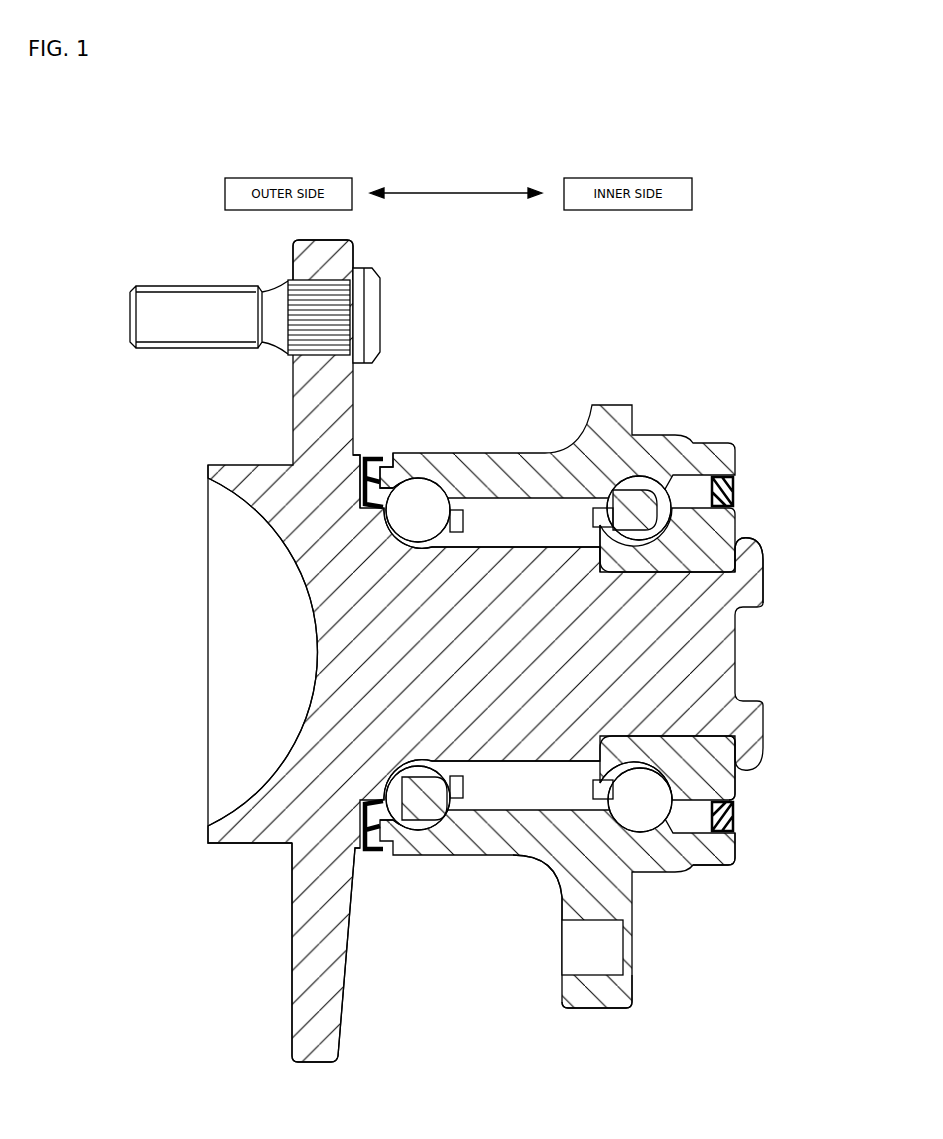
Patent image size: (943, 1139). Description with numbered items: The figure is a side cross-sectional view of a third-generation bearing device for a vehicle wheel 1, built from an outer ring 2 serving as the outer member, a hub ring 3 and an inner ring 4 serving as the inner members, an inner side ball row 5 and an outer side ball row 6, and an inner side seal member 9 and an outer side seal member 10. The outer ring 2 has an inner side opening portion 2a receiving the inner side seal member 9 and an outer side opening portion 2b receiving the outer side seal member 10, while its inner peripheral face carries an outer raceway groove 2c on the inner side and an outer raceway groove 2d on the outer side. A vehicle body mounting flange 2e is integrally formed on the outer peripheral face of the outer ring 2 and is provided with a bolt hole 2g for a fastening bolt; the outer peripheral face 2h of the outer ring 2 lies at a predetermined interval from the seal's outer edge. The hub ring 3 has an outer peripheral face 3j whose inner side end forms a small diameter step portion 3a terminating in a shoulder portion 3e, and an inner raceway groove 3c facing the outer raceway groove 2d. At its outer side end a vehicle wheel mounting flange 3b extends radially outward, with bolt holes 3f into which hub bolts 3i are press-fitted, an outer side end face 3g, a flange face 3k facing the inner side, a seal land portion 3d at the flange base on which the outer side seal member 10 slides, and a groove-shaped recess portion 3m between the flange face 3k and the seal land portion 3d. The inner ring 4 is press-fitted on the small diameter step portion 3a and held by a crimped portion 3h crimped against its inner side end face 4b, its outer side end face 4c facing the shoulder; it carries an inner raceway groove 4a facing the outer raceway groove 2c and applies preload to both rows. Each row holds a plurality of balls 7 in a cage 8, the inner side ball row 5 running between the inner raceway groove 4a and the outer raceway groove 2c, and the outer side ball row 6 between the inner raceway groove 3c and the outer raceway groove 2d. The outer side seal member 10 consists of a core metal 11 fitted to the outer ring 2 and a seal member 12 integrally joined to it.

The bearing device for a vehicle wheel 1 is at (686, 381).
The outer ring 2 is at (488, 434).
The inner side opening portion 2a is at (728, 742).
The outer side opening portion 2b is at (387, 798).
The outer raceway groove on the inner side 2c is at (553, 862).
The outer raceway groove on the outer side 2d is at (446, 482).
The vehicle body mounting flange 2e is at (632, 992).
The bolt hole 2g is at (606, 975).
The outer peripheral face of the outer ring 2h is at (388, 470).
The hub ring 3 is at (263, 449).
The small diameter step portion 3a is at (613, 763).
The vehicle wheel mounting flange 3b is at (300, 262).
The inner raceway groove on the outer side 3c is at (440, 480).
The seal land portion 3d is at (380, 848).
The shoulder portion 3e is at (601, 566).
The bolt hole 3f is at (295, 340).
The outer side end face 3g is at (206, 480).
The crimped portion 3h is at (758, 554).
The hub bolt 3i is at (176, 352).
The outer peripheral face of the hub ring 3j is at (508, 546).
The flange face 3k is at (368, 452).
The recess portion 3m is at (355, 848).
The inner ring 4 is at (738, 526).
The inner raceway groove on the inner side 4a is at (660, 812).
The inner side end face 4b is at (740, 752).
The outer side end face 4c is at (587, 548).
The inner side ball row 5 is at (584, 375).
The outer side ball row 6 is at (410, 902).
The ball 7 is at (632, 452).
The cage 8 is at (596, 455).
The inner side seal member 9 is at (740, 490).
The outer side seal member 10 is at (372, 470).
The core metal 11 is at (403, 488).
The seal member 12 is at (268, 528).